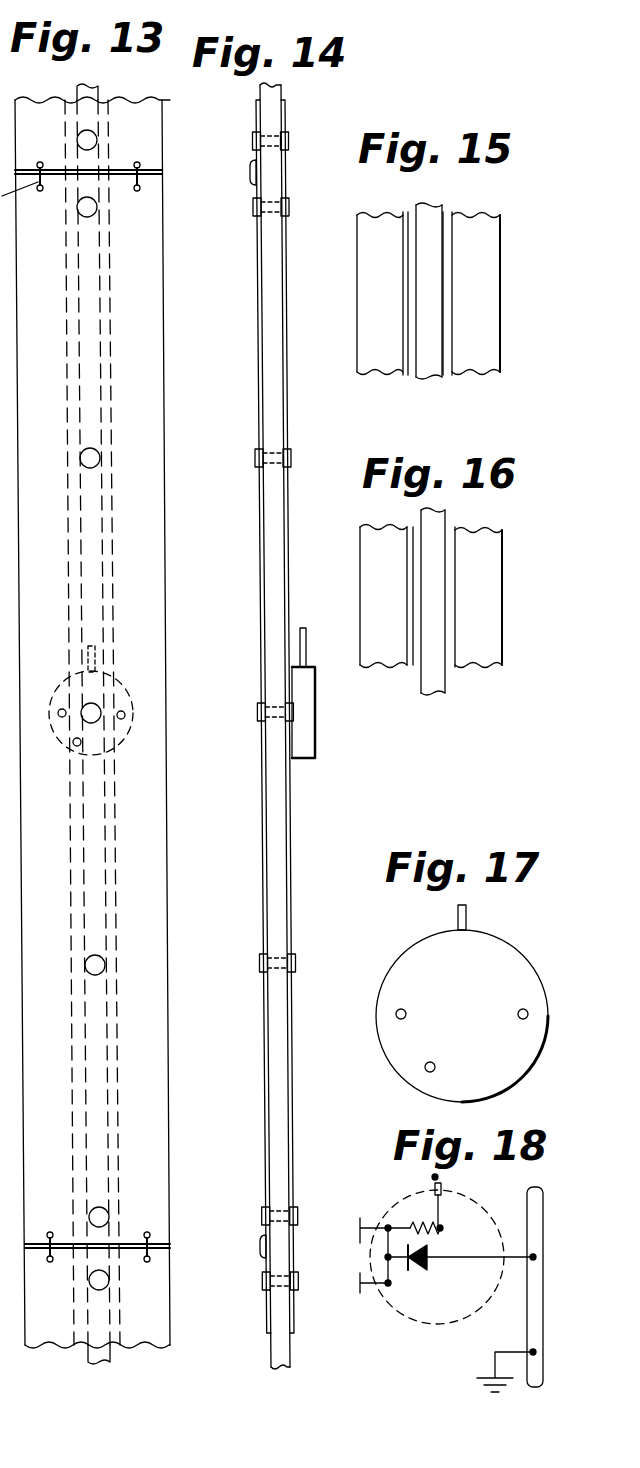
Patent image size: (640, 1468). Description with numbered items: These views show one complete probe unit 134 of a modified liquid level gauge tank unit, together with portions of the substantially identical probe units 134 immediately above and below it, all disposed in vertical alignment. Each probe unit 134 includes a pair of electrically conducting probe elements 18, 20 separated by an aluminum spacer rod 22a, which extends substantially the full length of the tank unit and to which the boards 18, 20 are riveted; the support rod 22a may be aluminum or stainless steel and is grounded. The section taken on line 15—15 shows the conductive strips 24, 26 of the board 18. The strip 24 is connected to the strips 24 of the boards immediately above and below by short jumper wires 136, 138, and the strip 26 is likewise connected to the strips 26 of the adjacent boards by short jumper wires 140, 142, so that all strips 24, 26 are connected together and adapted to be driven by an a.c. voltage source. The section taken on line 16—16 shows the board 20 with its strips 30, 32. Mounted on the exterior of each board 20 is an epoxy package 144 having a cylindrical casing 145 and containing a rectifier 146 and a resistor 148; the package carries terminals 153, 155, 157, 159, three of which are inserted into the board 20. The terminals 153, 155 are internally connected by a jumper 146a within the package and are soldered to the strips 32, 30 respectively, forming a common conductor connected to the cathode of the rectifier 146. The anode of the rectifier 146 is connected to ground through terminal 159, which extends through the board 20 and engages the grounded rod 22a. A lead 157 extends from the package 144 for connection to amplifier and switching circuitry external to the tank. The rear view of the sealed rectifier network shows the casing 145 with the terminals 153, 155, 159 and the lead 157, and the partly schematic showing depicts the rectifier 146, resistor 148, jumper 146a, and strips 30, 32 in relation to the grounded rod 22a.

In FIG. 14, the section line 15— 15 is at (296, 797).
In FIG. 14, the section line 16— 16 is at (253, 797).
In FIG. 13, the probe element 18 is at (150, 594).
In FIG. 14, the probe element 18 is at (259, 125).
In FIG. 15, the probe element 18 is at (503, 243).
In FIG. 14, the probe element 20 is at (288, 547).
In FIG. 16, the probe element 20 is at (512, 680).
In FIG. 13, the aluminum spacer rod 22a is at (110, 1358).
In FIG. 14, the aluminum spacer rod 22a is at (272, 366).
In FIG. 15, the aluminum spacer rod 22a is at (426, 367).
In FIG. 16, the aluminum spacer rod 22a is at (433, 688).
In FIG. 18, the aluminum spacer rod 22a is at (533, 1312).
In FIG. 13, the conductive strip 24 is at (46, 115).
In FIG. 15, the conductive strip 24 is at (485, 273).
In FIG. 13, the conductive strip 26 is at (140, 120).
In FIG. 15, the conductive strip 26 is at (372, 270).
In FIG. 16, the conductive strip 30 is at (487, 602).
In FIG. 18, the conductive strip 30 is at (357, 1232).
In FIG. 16, the conductive strip 32 is at (372, 610).
In FIG. 18, the conductive strip 32 is at (360, 1283).
In FIG. 13, the probe unit 134 is at (165, 135).
In FIG. 14, the probe unit 134 is at (254, 128).
In FIG. 14, the jumper wire 136 is at (253, 172).
In FIG. 13, the jumper wire 138 is at (48, 1256).
In FIG. 14, the jumper wire 138 is at (263, 1246).
In FIG. 13, the jumper wire 140 is at (142, 182).
In FIG. 14, the jumper wire 140 is at (250, 172).
In FIG. 13, the jumper wire 142 is at (150, 1240).
In FIG. 14, the jumper wire 142 is at (258, 1240).
In FIG. 13, the epoxy package 144 is at (133, 713).
In FIG. 14, the epoxy package 144 is at (305, 738).
In FIG. 16, the epoxy package 144 is at (357, 725).
In FIG. 17, the epoxy package 144 is at (532, 950).
In FIG. 17, the cylindrical casing 145 is at (513, 1063).
In FIG. 18, the cylindrical casing 145 is at (455, 1328).
In FIG. 18, the rectifier 146 is at (417, 1275).
In FIG. 18, the jumper 146a is at (390, 1275).
In FIG. 18, the resistor 148 is at (430, 1236).
In FIG. 13, the terminal 153 is at (60, 700).
In FIG. 17, the terminal 153 is at (399, 1009).
In FIG. 18, the terminal 153 is at (363, 1288).
In FIG. 13, the terminal 155 is at (116, 748).
In FIG. 17, the terminal 155 is at (526, 1009).
In FIG. 18, the terminal 155 is at (365, 1228).
In FIG. 13, the lead 157 is at (95, 650).
In FIG. 14, the lead 157 is at (306, 648).
In FIG. 16, the lead 157 is at (350, 683).
In FIG. 17, the lead 157 is at (458, 912).
In FIG. 18, the lead 157 is at (444, 1188).
In FIG. 13, the terminal 159 is at (70, 746).
In FIG. 17, the terminal 159 is at (425, 1067).
In FIG. 18, the terminal 159 is at (490, 1260).